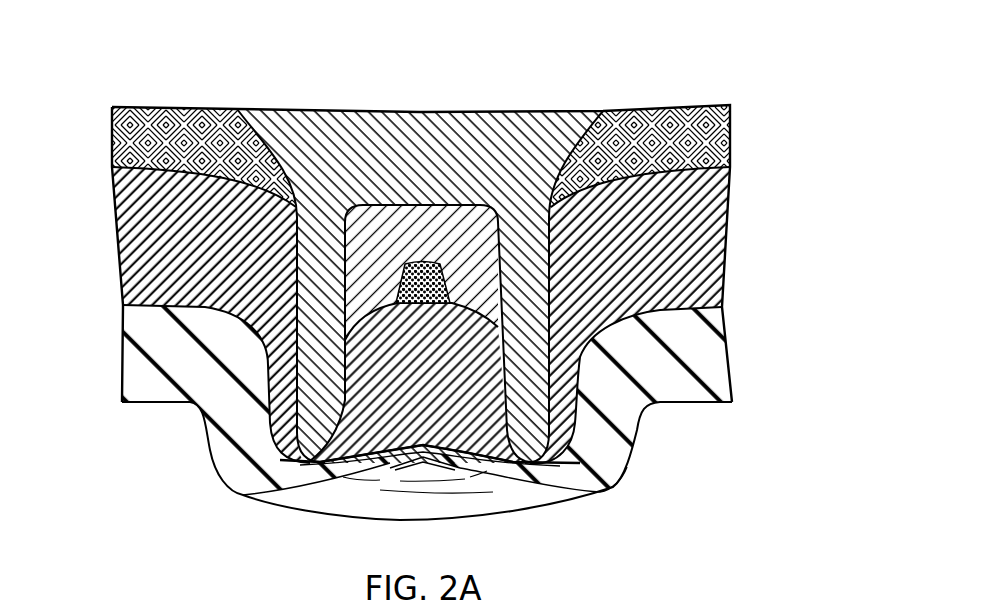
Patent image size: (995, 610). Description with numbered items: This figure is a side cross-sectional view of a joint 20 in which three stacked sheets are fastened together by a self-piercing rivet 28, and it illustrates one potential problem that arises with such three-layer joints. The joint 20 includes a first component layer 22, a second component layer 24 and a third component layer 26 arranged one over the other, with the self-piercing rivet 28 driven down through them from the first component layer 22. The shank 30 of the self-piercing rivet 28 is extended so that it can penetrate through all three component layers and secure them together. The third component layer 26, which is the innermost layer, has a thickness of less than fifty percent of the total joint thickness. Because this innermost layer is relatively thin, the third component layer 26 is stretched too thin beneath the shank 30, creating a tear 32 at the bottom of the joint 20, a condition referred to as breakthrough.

The joint 20 is at (357, 70).
The first component layer 22 is at (115, 140).
The second component layer 24 is at (118, 213).
The third component layer 26 is at (128, 350).
The self-piercing rivet 28 is at (514, 112).
The shank 30 is at (523, 290).
The tear 32 is at (390, 465).